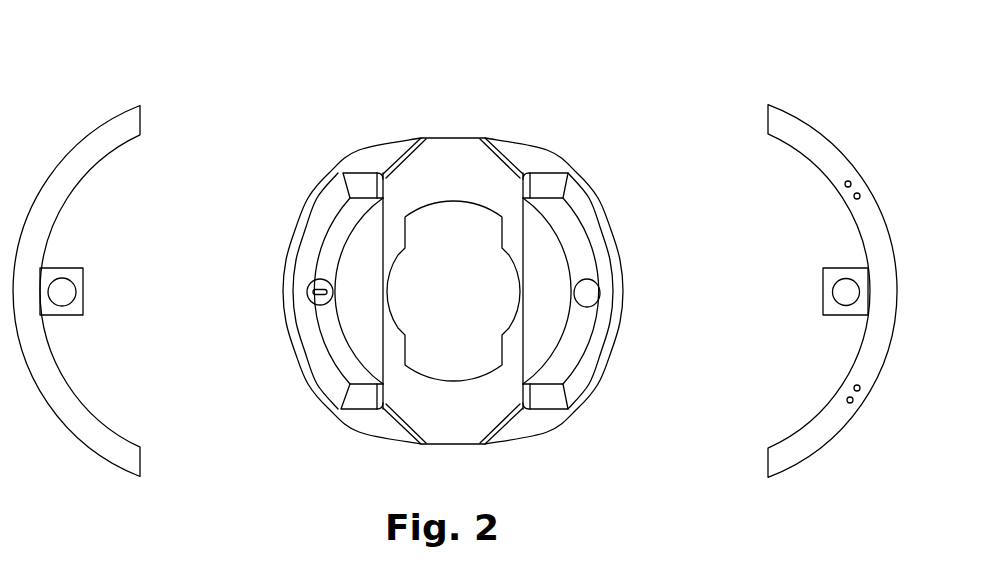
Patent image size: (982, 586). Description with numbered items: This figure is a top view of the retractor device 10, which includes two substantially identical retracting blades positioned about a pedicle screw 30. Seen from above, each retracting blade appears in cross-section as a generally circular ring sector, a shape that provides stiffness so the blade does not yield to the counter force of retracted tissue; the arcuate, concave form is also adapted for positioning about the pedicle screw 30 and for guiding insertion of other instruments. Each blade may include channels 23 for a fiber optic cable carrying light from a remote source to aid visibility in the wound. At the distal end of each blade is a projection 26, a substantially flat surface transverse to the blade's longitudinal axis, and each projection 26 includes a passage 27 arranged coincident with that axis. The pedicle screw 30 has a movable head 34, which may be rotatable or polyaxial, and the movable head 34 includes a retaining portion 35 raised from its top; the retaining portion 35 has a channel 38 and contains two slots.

The retractor device 10 is at (273, 54).
The channel 23 is at (860, 196).
The projection 26 is at (832, 273).
The passage 27 is at (845, 292).
The pedicle screw 30 is at (446, 291).
The movable head 34 is at (347, 386).
The retaining portion 35 is at (627, 266).
The channel 38 is at (592, 293).